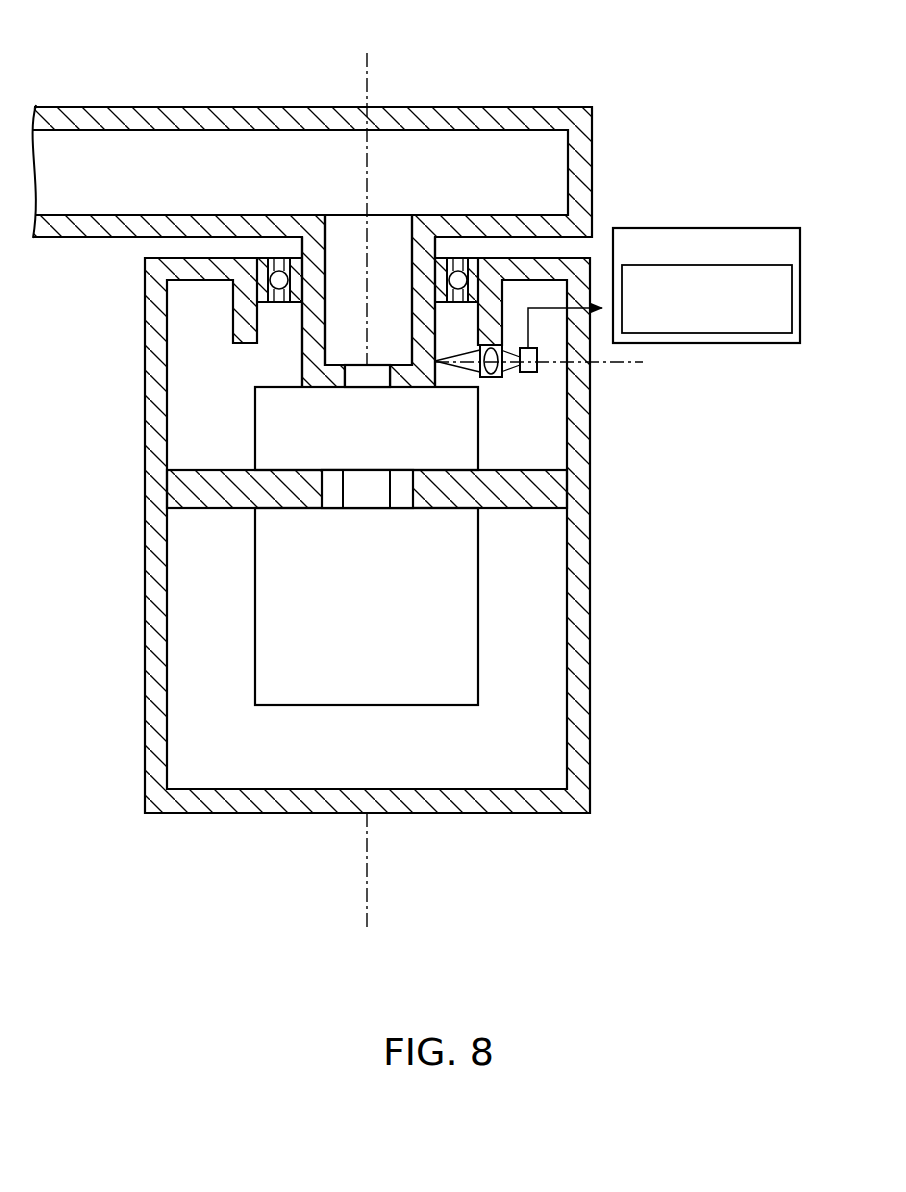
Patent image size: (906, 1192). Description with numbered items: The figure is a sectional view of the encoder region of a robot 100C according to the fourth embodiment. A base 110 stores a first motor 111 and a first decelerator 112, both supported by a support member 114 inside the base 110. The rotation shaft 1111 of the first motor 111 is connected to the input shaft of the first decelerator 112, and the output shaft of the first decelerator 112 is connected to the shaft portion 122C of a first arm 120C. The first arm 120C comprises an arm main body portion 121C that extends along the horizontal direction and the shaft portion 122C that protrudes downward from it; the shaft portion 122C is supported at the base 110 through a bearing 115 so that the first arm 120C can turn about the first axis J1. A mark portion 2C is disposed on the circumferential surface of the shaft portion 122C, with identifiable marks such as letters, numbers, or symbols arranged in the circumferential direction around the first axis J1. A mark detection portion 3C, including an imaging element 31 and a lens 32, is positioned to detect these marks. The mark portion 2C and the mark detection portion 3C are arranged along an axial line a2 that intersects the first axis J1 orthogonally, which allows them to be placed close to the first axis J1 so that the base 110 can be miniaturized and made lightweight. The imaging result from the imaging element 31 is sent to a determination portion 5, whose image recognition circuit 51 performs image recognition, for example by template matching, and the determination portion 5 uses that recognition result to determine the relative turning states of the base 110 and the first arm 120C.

The robot 100C is at (598, 70).
The first arm 120C is at (118, 105).
The arm main body portion 121C is at (240, 107).
The shaft portion 122C is at (302, 367).
The first axis J1 is at (370, 71).
The base 110 is at (600, 521).
The bearing 115 is at (264, 302).
The first decelerator 112 is at (255, 418).
The support member 114 is at (190, 490).
The first motor 111 is at (478, 622).
The rotation shaft 1111 is at (368, 497).
The mark portion 2C is at (447, 338).
The mark detection portion 3C is at (655, 428).
The imaging element 31 is at (533, 373).
The lens 32 is at (492, 377).
The axial line a2 is at (628, 365).
The determination portion 5 is at (724, 228).
The image recognition circuit 51 is at (792, 300).